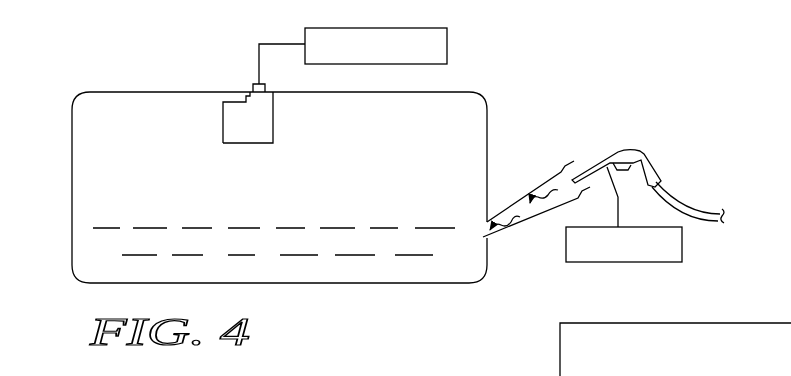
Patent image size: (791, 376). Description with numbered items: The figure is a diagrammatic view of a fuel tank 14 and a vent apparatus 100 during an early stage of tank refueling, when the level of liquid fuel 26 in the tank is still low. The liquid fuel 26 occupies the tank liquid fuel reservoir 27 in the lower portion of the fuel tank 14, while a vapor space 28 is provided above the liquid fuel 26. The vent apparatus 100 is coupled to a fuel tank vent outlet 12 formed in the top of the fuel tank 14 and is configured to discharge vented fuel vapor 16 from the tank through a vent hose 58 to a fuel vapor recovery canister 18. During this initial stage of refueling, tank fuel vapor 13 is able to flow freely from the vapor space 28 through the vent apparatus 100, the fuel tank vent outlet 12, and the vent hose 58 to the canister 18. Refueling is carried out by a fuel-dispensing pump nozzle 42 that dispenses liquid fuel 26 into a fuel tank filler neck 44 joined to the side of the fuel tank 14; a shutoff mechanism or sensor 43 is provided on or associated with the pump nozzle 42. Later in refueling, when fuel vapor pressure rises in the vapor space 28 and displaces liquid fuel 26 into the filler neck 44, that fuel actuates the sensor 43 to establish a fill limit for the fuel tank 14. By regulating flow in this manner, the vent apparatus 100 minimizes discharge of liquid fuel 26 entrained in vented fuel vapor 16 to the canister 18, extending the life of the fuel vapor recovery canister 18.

The fuel tank vent outlet 12 is at (266, 86).
The tank fuel vapor 13 is at (217, 180).
The fuel tank 14 is at (135, 88).
The vented fuel vapor 16 is at (262, 31).
The fuel vapor recovery canister 18 is at (447, 45).
The liquid fuel 26 is at (337, 232).
The tank liquid fuel reservoir 27 is at (104, 222).
The vapor space 28 is at (92, 158).
The fuel-dispensing pump nozzle 42 is at (639, 146).
The shutoff mechanism or sensor 43 is at (625, 263).
The fuel tank filler neck 44 is at (520, 200).
The vent hose 58 is at (287, 44).
The vent apparatus 100 is at (282, 135).